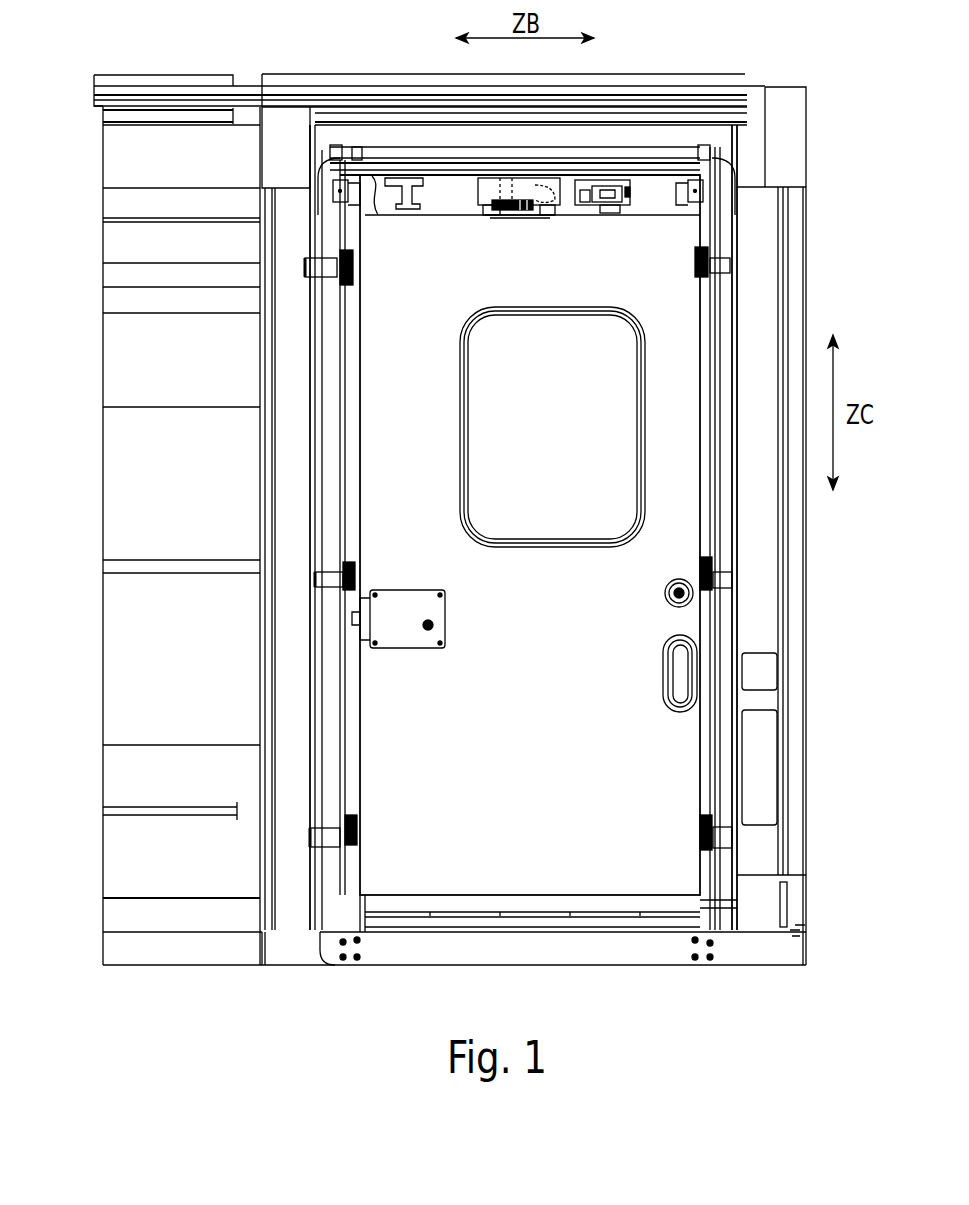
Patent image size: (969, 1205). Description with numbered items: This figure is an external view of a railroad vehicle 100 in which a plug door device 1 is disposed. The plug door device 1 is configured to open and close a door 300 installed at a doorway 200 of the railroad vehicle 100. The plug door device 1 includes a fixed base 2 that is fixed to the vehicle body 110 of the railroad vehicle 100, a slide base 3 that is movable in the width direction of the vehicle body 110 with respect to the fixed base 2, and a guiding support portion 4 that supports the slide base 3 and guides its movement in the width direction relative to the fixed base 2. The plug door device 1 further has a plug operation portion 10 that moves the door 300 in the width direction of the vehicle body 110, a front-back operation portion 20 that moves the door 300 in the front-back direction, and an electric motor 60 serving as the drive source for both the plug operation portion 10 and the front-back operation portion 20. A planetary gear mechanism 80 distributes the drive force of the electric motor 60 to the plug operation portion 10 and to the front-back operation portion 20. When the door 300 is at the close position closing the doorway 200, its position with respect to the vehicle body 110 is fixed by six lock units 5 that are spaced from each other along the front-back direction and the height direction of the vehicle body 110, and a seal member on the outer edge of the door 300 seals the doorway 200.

The plug door device 1 is at (762, 178).
The fixed base 2 is at (462, 166).
The slide base 3 is at (383, 175).
The guiding support portion 4 is at (336, 204).
The lock unit 5 is at (357, 263).
The plug operation portion 10 is at (569, 188).
The front-back operation portion 20 is at (472, 201).
The electric motor 60 is at (538, 220).
The planetary gear mechanism 80 is at (492, 222).
The railroad vehicle 100 is at (103, 374).
The vehicle body 110 is at (285, 123).
The doorway 200 is at (325, 372).
The door 300 is at (372, 502).